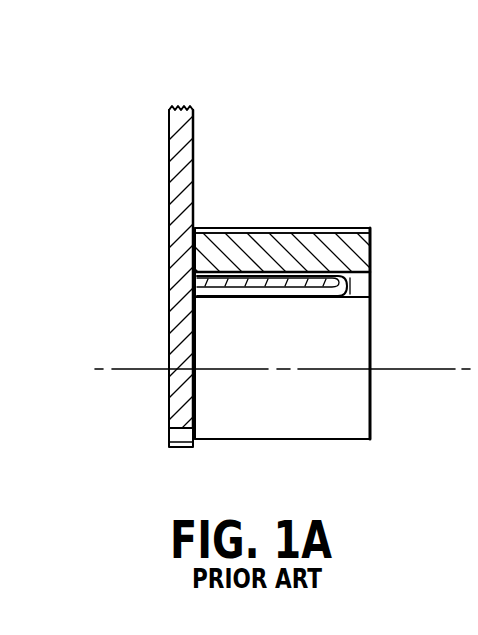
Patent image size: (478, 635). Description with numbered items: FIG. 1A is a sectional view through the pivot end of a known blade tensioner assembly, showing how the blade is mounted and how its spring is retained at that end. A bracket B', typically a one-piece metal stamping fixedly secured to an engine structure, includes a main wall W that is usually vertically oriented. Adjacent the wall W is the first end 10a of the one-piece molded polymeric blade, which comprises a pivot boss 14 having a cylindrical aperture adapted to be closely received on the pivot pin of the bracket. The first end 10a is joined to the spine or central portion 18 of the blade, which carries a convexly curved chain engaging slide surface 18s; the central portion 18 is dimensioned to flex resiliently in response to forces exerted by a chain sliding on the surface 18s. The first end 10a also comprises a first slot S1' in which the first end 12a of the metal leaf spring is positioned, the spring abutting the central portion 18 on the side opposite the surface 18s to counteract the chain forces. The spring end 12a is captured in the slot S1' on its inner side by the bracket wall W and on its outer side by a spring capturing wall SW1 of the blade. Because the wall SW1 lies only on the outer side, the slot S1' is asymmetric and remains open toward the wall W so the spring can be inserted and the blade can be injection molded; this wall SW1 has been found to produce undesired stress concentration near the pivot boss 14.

The main wall W is at (195, 142).
The bracket B' is at (191, 61).
The first end of the blade 10a is at (378, 238).
The central portion 18 is at (282, 248).
The chain engaging slide surface 18s is at (322, 227).
The first slot S1' is at (155, 229).
The first end of the spring 12a is at (265, 275).
The spring capturing wall SW1 is at (357, 288).
The pivot boss 14 is at (338, 418).